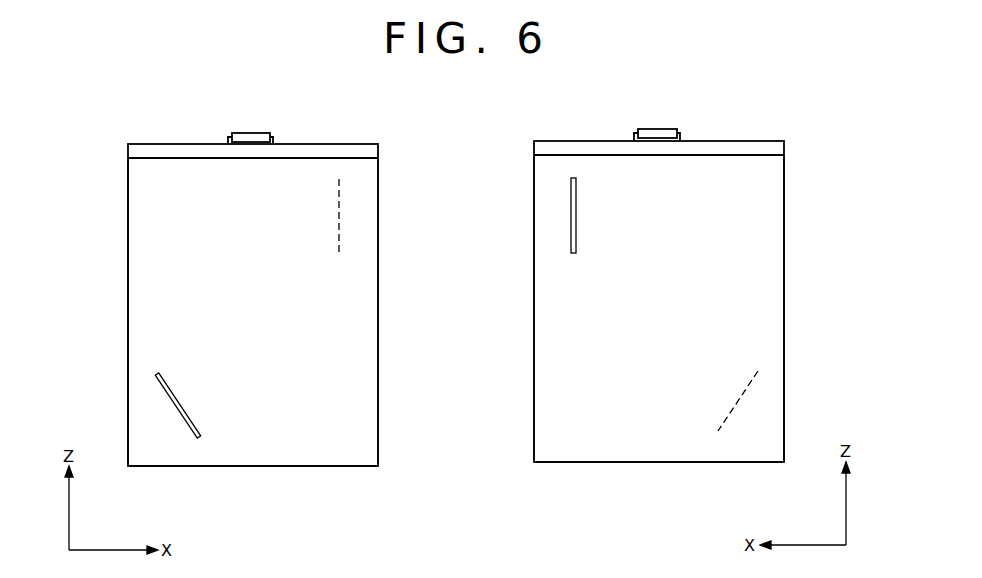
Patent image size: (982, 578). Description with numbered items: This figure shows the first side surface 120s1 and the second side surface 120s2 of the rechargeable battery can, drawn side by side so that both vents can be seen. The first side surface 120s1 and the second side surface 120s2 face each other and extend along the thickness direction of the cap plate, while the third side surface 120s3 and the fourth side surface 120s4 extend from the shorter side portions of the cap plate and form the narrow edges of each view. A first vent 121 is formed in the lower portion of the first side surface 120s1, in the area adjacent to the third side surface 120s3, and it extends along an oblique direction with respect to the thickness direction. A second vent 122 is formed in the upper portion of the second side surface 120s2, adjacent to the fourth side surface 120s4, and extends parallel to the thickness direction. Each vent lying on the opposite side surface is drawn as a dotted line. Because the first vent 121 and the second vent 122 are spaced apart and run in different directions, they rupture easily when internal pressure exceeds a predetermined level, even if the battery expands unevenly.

The first side surface 120s1 is at (348, 443).
The second side surface 120s2 is at (775, 310).
The third side surface 120s3 is at (128, 305).
The fourth side surface 120s4 is at (380, 353).
The first vent 121 is at (173, 404).
The second vent 122 is at (340, 219).